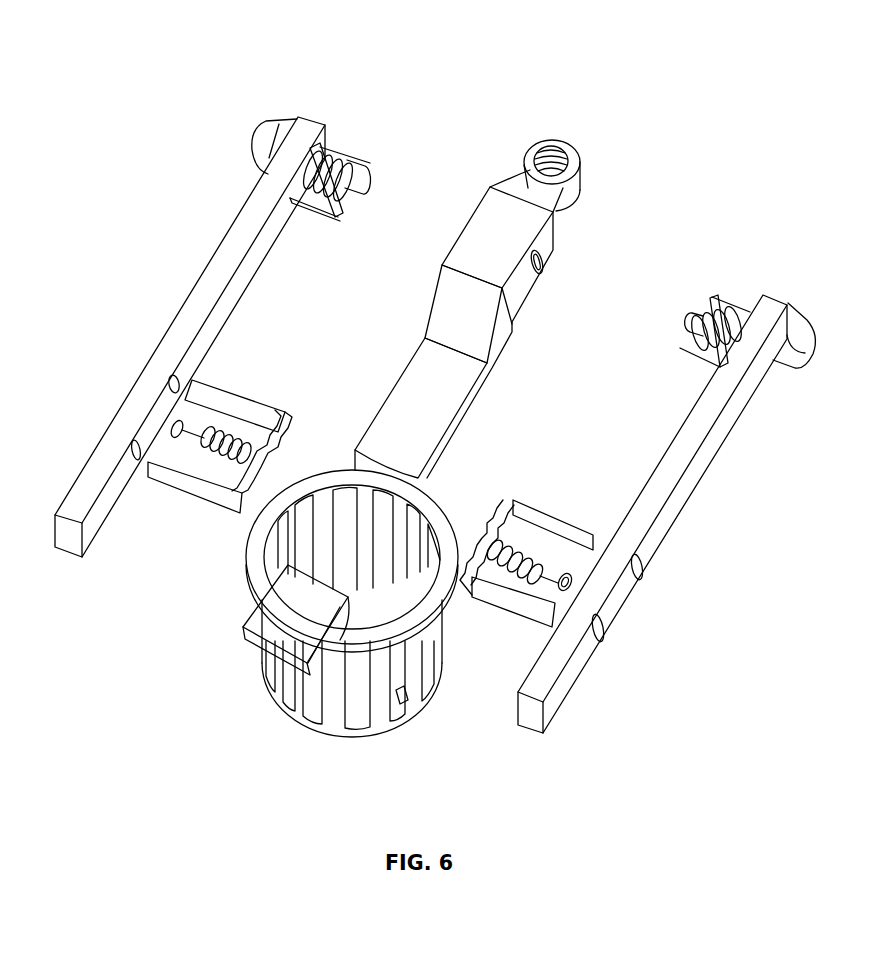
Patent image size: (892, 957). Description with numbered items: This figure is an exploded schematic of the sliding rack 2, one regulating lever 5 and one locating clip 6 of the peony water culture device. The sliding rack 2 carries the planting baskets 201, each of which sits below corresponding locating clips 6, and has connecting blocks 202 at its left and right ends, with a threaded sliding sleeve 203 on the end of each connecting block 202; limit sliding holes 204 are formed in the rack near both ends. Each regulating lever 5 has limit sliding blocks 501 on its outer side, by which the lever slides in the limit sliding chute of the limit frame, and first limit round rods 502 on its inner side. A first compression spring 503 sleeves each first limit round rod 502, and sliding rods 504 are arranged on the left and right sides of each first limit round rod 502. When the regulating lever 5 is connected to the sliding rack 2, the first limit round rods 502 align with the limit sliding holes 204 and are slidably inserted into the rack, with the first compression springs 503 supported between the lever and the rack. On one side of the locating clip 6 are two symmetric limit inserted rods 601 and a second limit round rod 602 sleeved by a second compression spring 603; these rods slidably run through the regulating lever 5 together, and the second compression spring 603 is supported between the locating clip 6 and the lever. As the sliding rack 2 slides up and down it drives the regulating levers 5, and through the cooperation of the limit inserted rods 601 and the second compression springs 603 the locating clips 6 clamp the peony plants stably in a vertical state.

The sliding rack 2 is at (473, 368).
The planting basket 201 is at (401, 697).
The connecting block 202 is at (563, 152).
The threaded sliding sleeve 203 is at (535, 193).
The limit sliding hole 204 is at (552, 250).
The regulating lever 5 is at (145, 395).
The limit sliding block 501 is at (281, 128).
The first limit round rod 502 is at (350, 163).
The first compression spring 503 is at (300, 186).
The sliding rod 504 is at (293, 200).
The locating clip 6 is at (626, 639).
The limit inserted rod 601 is at (507, 605).
The second limit round rod 602 is at (567, 575).
The second compression spring 603 is at (542, 592).